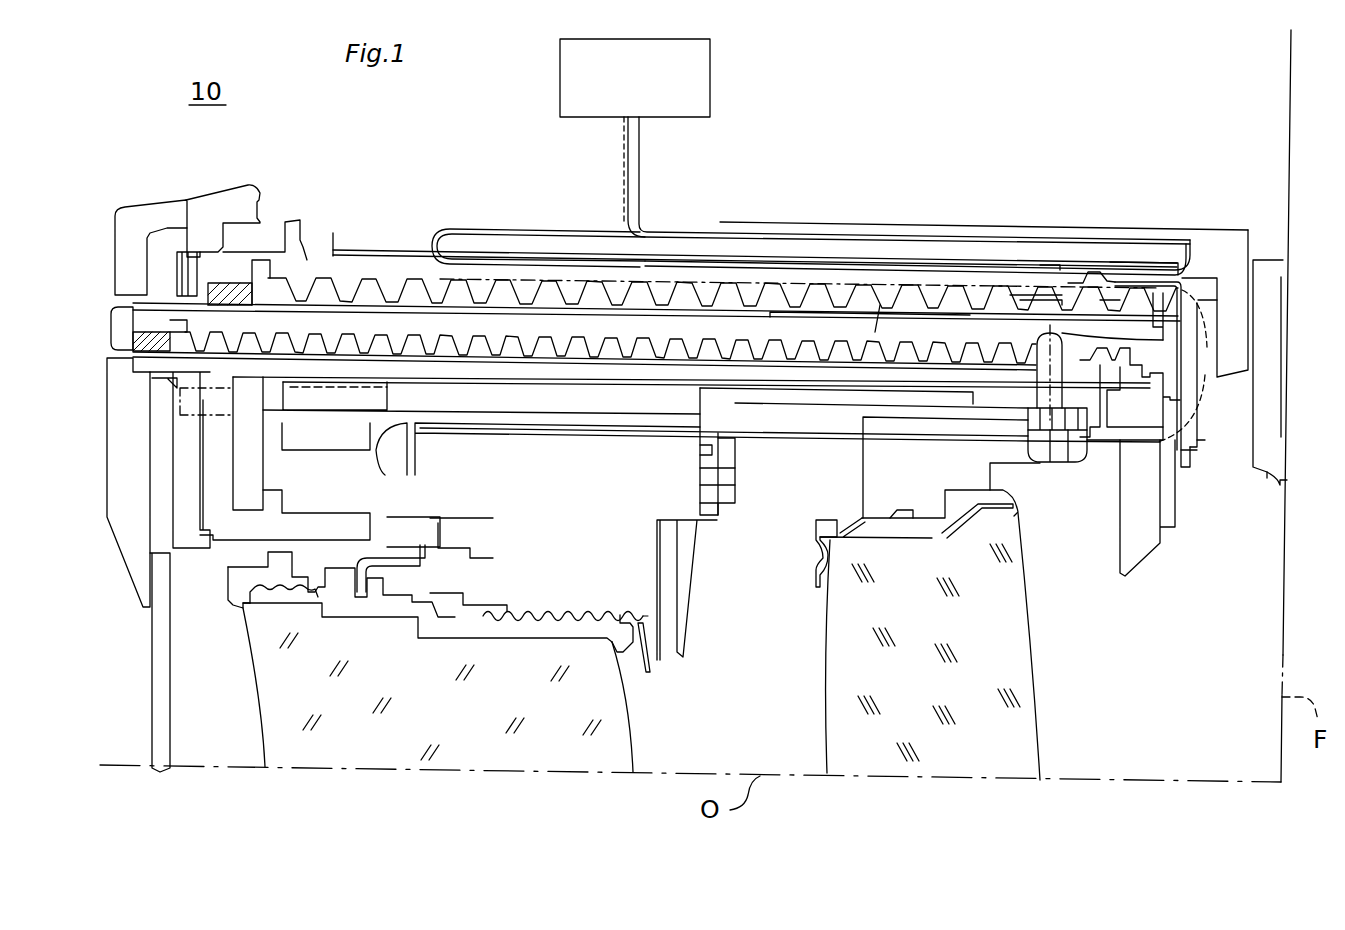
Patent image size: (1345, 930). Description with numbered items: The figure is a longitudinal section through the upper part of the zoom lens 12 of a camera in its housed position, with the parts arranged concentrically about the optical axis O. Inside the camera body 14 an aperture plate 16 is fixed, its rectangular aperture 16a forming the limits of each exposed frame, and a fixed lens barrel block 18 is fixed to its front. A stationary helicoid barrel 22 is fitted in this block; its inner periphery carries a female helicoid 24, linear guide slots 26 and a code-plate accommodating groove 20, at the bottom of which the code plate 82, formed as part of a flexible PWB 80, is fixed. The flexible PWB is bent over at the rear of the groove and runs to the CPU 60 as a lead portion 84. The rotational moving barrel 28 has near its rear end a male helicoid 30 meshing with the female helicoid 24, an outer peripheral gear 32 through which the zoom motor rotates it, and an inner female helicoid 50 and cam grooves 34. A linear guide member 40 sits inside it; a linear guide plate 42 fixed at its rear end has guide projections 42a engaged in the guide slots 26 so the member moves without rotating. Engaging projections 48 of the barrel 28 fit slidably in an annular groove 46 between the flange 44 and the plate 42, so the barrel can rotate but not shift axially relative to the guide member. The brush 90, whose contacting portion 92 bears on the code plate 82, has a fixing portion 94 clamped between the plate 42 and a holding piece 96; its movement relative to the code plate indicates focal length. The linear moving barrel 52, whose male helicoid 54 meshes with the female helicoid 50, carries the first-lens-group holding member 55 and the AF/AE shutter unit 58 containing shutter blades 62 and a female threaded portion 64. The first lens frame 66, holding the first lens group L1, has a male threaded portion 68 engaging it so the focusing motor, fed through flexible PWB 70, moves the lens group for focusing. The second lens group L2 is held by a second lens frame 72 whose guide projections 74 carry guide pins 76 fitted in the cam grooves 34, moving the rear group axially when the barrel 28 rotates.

The zoom lens 12 is at (104, 455).
The camera body 14 is at (233, 198).
The aperture plate 16 is at (1272, 328).
The aperture 16a is at (1277, 497).
The fixed lens barrel block 18 is at (1207, 245).
The code-plate accommodating groove 20 is at (943, 276).
The stationary helicoid barrel 22 is at (388, 270).
The female helicoid 24 is at (500, 288).
The linear guide slot 26 is at (843, 305).
The rotational moving barrel 28 is at (330, 322).
The male helicoid 30 is at (1046, 298).
The outer peripheral gear 32 is at (1118, 298).
The cam groove 34 is at (1002, 450).
The linear guide member 40 is at (543, 402).
The linear guide plate 42 is at (1173, 388).
The guide projection 42a is at (1163, 323).
The flange 44 is at (1112, 400).
The annular groove 46 is at (1160, 378).
The engaging projection 48 is at (1157, 546).
The female helicoid 50 is at (816, 345).
The linear moving barrel 52 is at (610, 372).
The male helicoid 54 is at (896, 358).
The first-lens-group holding member 55 is at (774, 396).
The AF/AE shutter unit 58 is at (645, 582).
The CPU 60 is at (640, 63).
The shutter blade 62 is at (662, 655).
The female threaded portion 64 is at (633, 617).
The first lens frame 66 is at (527, 632).
The male threaded portion 68 is at (592, 615).
The flexible PWB 70 is at (618, 160).
The second lens frame 72 is at (928, 537).
The guide projection 74 is at (1022, 510).
The guide pin 76 is at (1197, 346).
The flexible PWB 80 is at (647, 212).
The code plate 82 is at (806, 240).
The lead portion 84 is at (1053, 245).
The brush 90 is at (1190, 290).
The contacting portion 92 is at (1115, 300).
The fixing portion 94 is at (1178, 425).
The holding piece 96 is at (1192, 447).
The first lens group L1 is at (356, 752).
The second lens group L2 is at (925, 762).